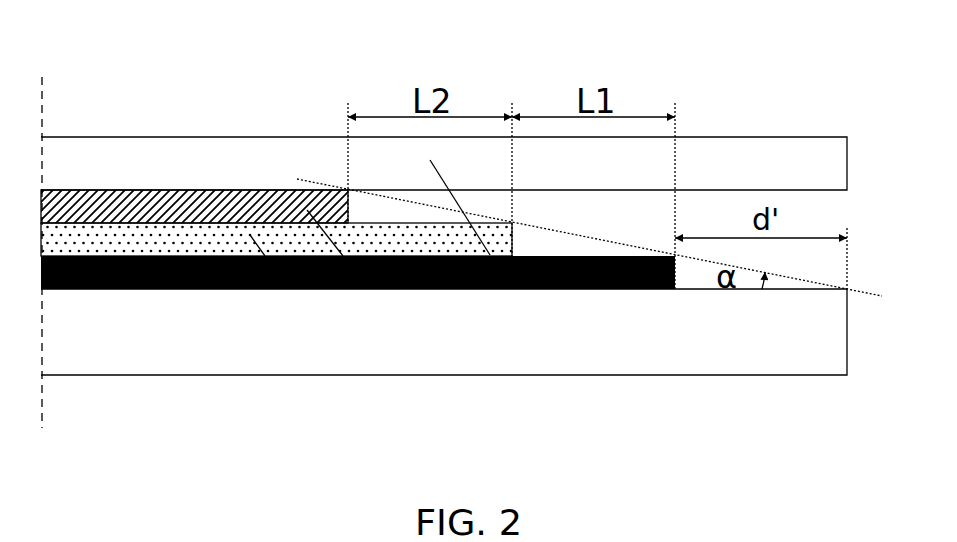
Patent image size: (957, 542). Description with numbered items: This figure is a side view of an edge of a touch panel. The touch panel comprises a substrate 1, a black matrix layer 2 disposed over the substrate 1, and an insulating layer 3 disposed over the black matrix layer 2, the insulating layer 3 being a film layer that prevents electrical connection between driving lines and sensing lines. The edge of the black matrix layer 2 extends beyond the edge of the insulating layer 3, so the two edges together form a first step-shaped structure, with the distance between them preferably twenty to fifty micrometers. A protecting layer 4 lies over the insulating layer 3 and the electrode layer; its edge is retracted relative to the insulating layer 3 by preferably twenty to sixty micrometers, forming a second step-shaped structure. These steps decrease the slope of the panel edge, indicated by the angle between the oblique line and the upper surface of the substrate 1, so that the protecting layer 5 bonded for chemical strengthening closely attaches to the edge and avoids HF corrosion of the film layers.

The substrate 1 is at (145, 347).
The black matrix layer 2 is at (185, 289).
The insulating layer 3 is at (288, 289).
The protecting layer 4 is at (372, 289).
The protecting layer 5 is at (510, 289).